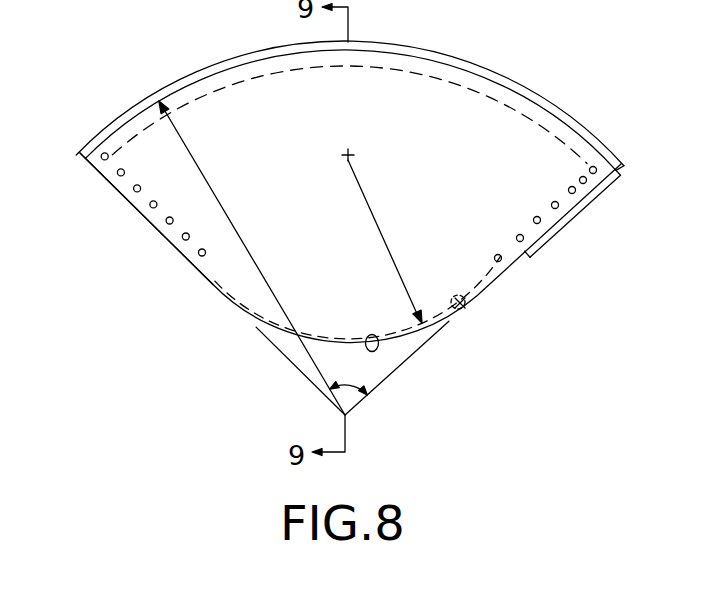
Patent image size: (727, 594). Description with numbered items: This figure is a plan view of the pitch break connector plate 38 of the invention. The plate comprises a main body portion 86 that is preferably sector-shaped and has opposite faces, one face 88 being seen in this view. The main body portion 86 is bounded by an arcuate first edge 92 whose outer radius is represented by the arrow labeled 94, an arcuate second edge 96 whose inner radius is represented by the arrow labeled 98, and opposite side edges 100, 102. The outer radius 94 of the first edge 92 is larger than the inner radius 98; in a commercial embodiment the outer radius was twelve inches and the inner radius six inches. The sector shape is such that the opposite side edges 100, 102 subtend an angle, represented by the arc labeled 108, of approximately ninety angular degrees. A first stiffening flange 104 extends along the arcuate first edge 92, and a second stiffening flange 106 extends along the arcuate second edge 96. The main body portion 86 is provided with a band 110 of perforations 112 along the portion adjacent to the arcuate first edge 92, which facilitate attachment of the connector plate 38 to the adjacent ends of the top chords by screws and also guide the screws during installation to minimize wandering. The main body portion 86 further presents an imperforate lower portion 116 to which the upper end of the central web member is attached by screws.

The pitch break connector plate 38 is at (548, 81).
The main body portion 86 is at (183, 268).
The face 88 is at (446, 140).
The arcuate first edge 92 is at (443, 52).
The outer radius 94 is at (263, 279).
The arcuate second edge 96 is at (370, 337).
The inner radius 98 is at (386, 243).
The side edge 100 is at (153, 220).
The side edge 102 is at (533, 253).
The first stiffening flange 104 is at (595, 144).
The second stiffening flange 106 is at (466, 317).
The angle 108 is at (374, 385).
The band of perforations 110 is at (578, 215).
The perforations 112 is at (586, 169).
The imperforate lower portion 116 is at (358, 245).